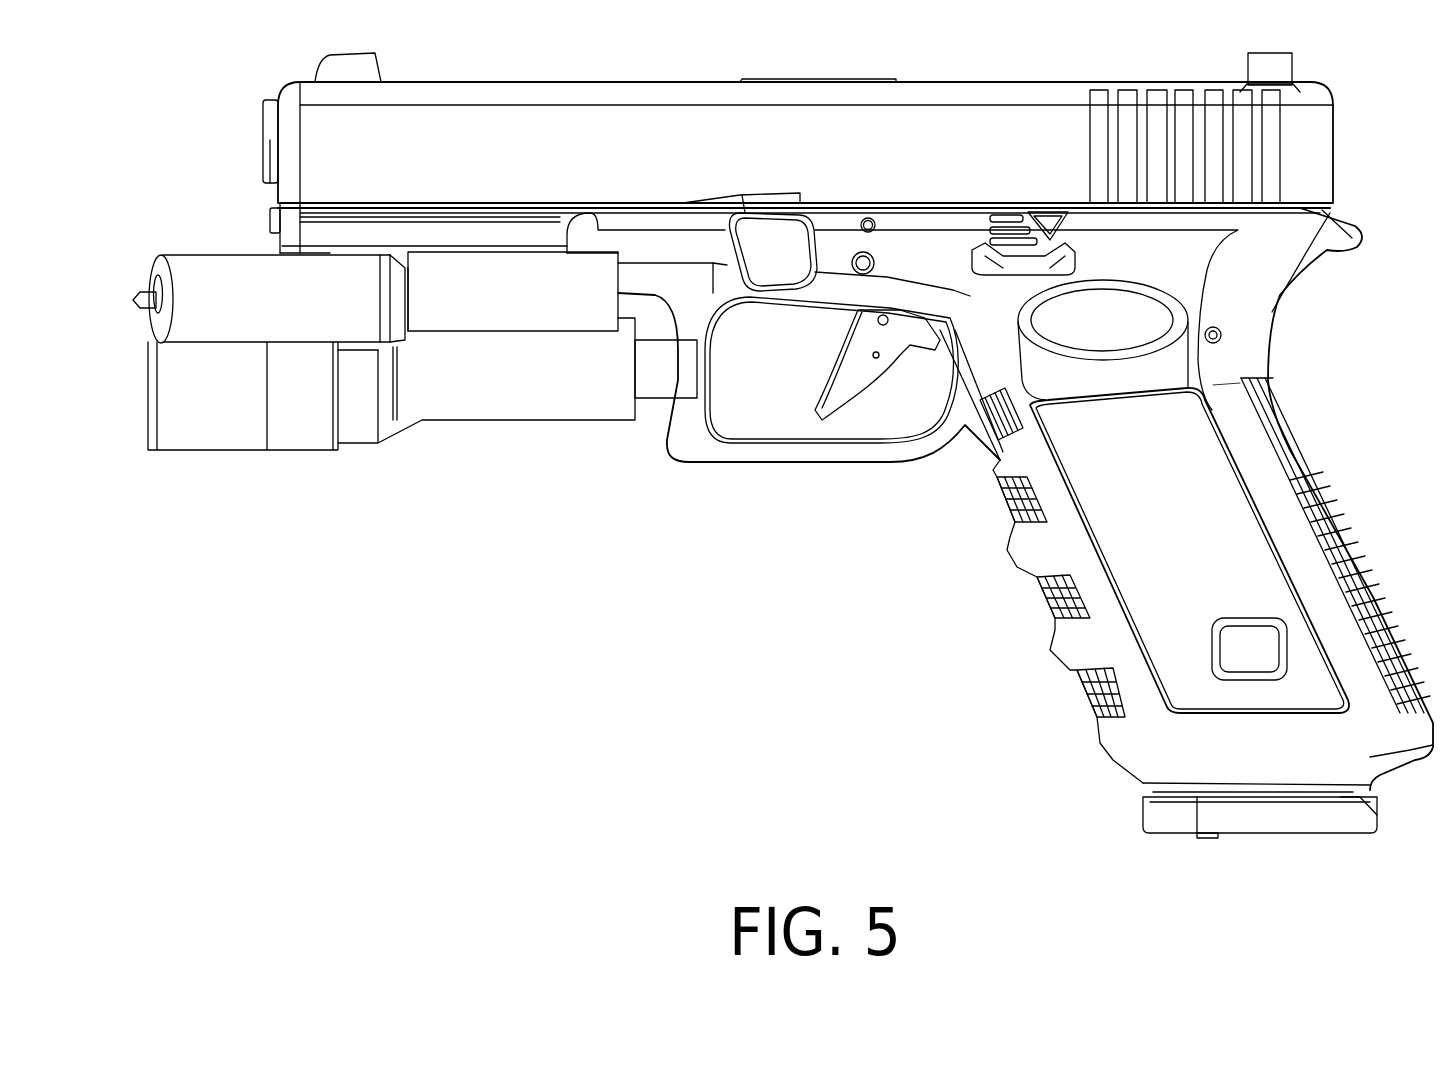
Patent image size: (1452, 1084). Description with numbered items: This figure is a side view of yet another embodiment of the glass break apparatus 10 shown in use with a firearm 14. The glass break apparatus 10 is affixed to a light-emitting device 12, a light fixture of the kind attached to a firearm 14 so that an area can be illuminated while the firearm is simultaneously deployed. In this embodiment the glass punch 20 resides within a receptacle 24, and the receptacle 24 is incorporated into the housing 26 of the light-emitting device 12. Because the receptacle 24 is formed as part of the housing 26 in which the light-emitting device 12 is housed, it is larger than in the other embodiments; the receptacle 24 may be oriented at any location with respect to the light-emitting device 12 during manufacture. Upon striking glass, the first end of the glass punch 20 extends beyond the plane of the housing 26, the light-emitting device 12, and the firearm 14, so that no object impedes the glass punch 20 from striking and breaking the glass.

The glass break apparatus 10 is at (195, 238).
The light-emitting device 12 is at (485, 420).
The firearm 14 is at (786, 182).
The glass punch 20 is at (138, 298).
The receptacle 24 is at (294, 310).
The housing 26 is at (277, 440).